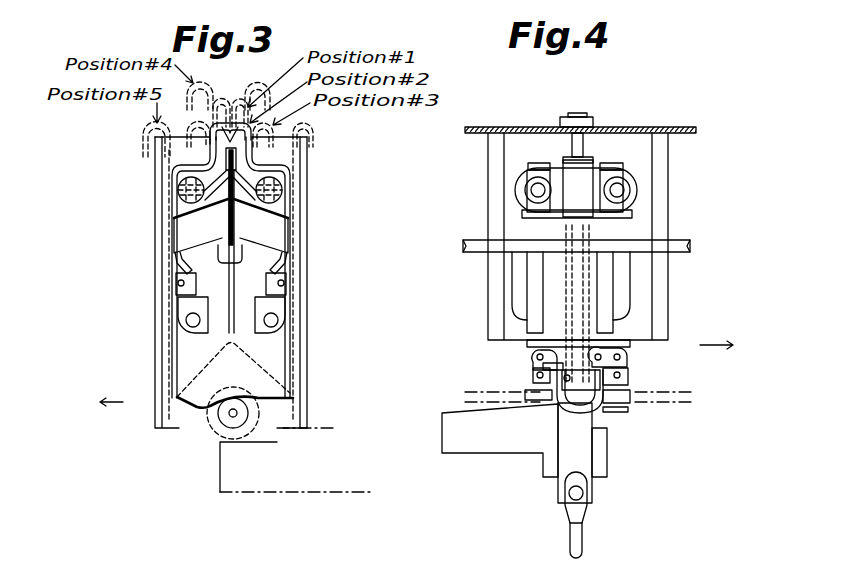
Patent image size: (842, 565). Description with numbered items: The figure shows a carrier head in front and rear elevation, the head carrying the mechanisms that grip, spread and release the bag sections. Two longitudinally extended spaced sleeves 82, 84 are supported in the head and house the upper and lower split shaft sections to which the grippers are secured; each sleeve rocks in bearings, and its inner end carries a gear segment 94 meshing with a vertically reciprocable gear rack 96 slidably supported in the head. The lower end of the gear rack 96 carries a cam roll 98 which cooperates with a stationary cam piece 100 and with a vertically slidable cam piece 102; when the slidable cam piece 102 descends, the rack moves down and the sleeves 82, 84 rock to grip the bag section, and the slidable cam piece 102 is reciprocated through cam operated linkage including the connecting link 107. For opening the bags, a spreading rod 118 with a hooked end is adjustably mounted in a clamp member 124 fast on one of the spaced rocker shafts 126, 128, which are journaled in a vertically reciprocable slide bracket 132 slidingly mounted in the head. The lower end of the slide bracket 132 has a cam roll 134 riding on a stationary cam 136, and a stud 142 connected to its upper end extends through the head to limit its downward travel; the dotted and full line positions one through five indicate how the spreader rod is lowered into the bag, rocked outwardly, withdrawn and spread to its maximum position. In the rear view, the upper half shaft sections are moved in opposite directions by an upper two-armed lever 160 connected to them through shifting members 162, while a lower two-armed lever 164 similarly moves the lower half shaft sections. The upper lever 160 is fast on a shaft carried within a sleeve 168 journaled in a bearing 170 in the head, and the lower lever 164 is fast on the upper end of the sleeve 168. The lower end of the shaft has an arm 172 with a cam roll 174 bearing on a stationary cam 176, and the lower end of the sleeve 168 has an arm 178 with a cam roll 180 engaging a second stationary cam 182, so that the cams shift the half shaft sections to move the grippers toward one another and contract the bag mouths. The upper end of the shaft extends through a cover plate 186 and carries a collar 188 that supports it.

In FIG. 3, the sleeve 82 is at (286, 200).
In FIG. 3, the sleeve 84 is at (178, 205).
In FIG. 4, the sleeve 84 is at (520, 188).
In FIG. 4, the gear segment 94 is at (507, 172).
In FIG. 4, the gear rack 96 is at (588, 217).
In FIG. 4, the cam roll 98 is at (597, 410).
In FIG. 4, the stationary cam piece 100 is at (442, 428).
In FIG. 4, the vertically slidable cam piece 102 is at (583, 458).
In FIG. 4, the connecting link 107 is at (582, 530).
In FIG. 3, the bag spreading rod 118 is at (176, 255).
In FIG. 3, the clamp member 124 is at (183, 299).
In FIG. 3, the rocker shaft 126 is at (272, 320).
In FIG. 3, the rocker shaft 128 is at (190, 320).
In FIG. 3, the slide bracket 132 is at (290, 372).
In FIG. 3, the cam roll 134 is at (258, 428).
In FIG. 3, the stationary cam 136 is at (290, 492).
In FIG. 3, the stud 142 is at (236, 222).
In FIG. 4, the upper two-armed lever 160 is at (597, 163).
In FIG. 4, the shifting member 162 is at (505, 163).
In FIG. 4, the lower two-armed lever 164 is at (542, 217).
In FIG. 4, the sleeve 168 is at (593, 307).
In FIG. 4, the bearing 170 is at (598, 327).
In FIG. 4, the arm 172 is at (623, 373).
In FIG. 4, the cam roll 174 is at (633, 405).
In FIG. 4, the stationary cam 176 is at (695, 407).
In FIG. 4, the arm 178 is at (535, 365).
In FIG. 4, the cam roll 180 is at (543, 392).
In FIG. 4, the second stationary cam 182 is at (465, 392).
In FIG. 4, the cover plate 186 is at (573, 143).
In FIG. 4, the collar 188 is at (588, 117).